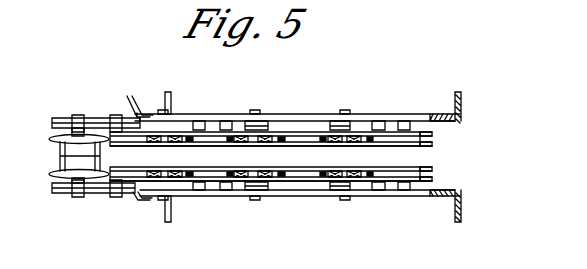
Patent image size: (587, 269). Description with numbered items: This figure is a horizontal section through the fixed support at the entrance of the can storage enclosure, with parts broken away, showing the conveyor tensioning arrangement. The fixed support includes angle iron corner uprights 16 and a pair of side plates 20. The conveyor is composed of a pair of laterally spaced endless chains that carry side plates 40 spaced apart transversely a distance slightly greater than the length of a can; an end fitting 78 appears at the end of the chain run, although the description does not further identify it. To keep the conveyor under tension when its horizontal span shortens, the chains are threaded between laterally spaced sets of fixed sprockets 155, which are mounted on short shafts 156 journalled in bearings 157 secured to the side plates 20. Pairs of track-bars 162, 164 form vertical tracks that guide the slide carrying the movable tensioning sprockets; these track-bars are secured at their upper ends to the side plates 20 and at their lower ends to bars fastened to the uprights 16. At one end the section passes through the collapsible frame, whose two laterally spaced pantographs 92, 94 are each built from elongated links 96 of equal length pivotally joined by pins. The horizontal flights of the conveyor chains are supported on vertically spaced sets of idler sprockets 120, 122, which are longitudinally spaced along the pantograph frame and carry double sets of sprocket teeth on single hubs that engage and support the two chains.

The angle iron corner uprights 16 is at (172, 96).
The side plates 20 is at (297, 114).
The side plates 40 is at (430, 178).
The end block 78 is at (431, 149).
The pantograph 92 is at (63, 193).
The pantograph 94 is at (60, 118).
The elongated links 96 is at (140, 120).
The idler sprockets 120 is at (76, 154).
The idler sprockets 122 is at (57, 172).
The fixed sprockets 155 is at (170, 137).
The short shafts 156 is at (163, 148).
The bearings 157 is at (250, 120).
The track-bars 162 is at (200, 121).
The track-bars 164 is at (223, 121).